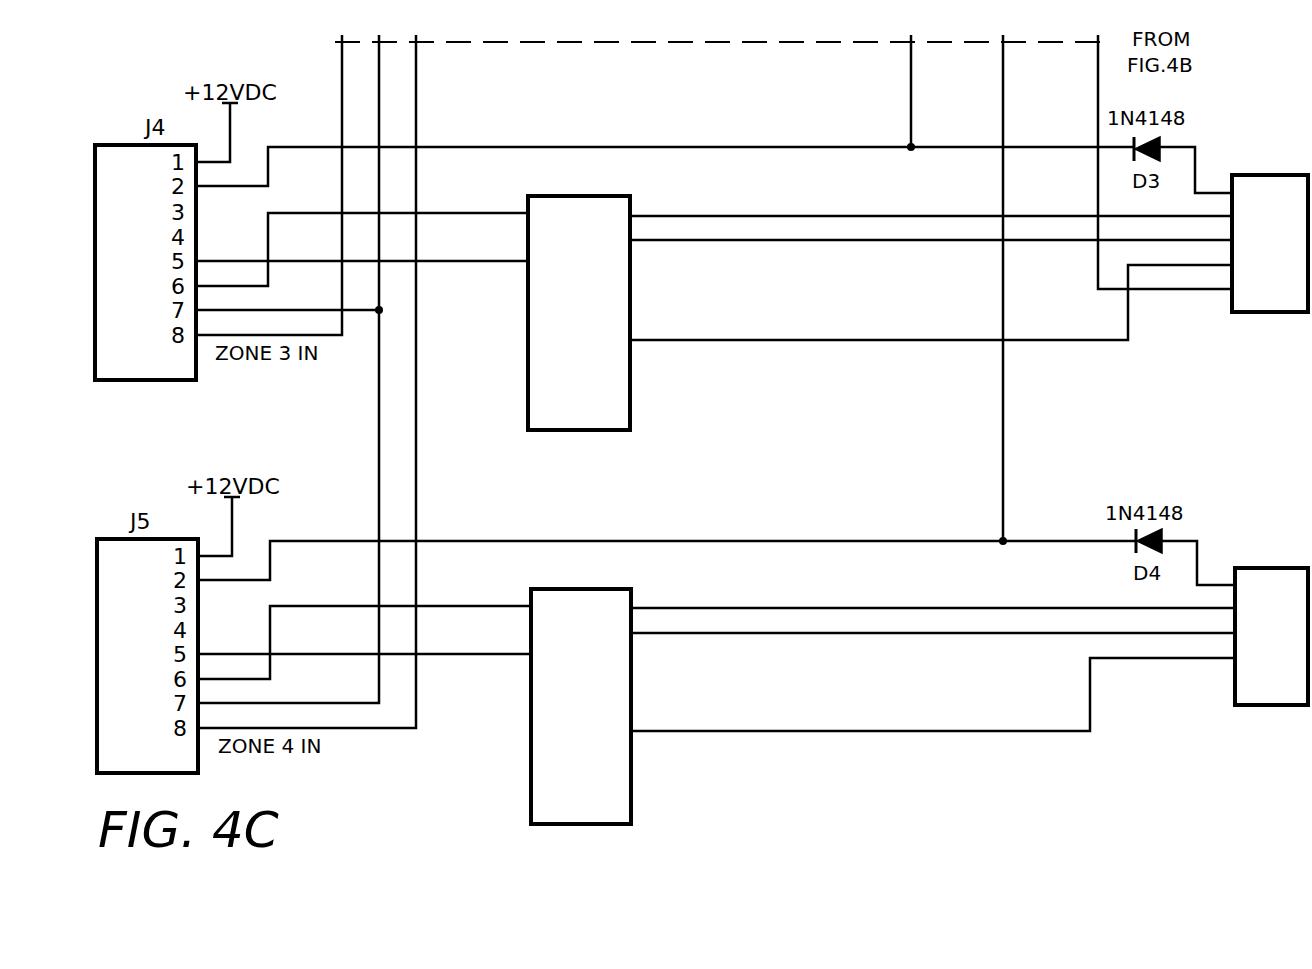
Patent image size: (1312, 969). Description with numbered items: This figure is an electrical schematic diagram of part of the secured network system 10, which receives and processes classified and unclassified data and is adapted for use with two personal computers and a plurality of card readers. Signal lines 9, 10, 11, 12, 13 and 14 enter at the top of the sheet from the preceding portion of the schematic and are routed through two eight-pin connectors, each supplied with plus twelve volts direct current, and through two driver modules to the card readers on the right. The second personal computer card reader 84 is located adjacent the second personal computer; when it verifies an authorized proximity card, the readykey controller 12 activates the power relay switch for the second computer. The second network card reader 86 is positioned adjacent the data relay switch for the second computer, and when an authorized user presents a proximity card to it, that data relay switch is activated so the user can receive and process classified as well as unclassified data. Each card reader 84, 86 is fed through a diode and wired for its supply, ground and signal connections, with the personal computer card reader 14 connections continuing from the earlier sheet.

The signal line 9 is at (273, 170).
The secured network system 10 is at (295, 354).
The signal line 11 is at (315, 367).
The readykey controller 12 is at (502, 800).
The signal line 13 is at (1003, 275).
The personal computer card reader 14 is at (1158, 147).
The second personal computer card reader 84 is at (1240, 184).
The second network card reader 86 is at (1243, 578).